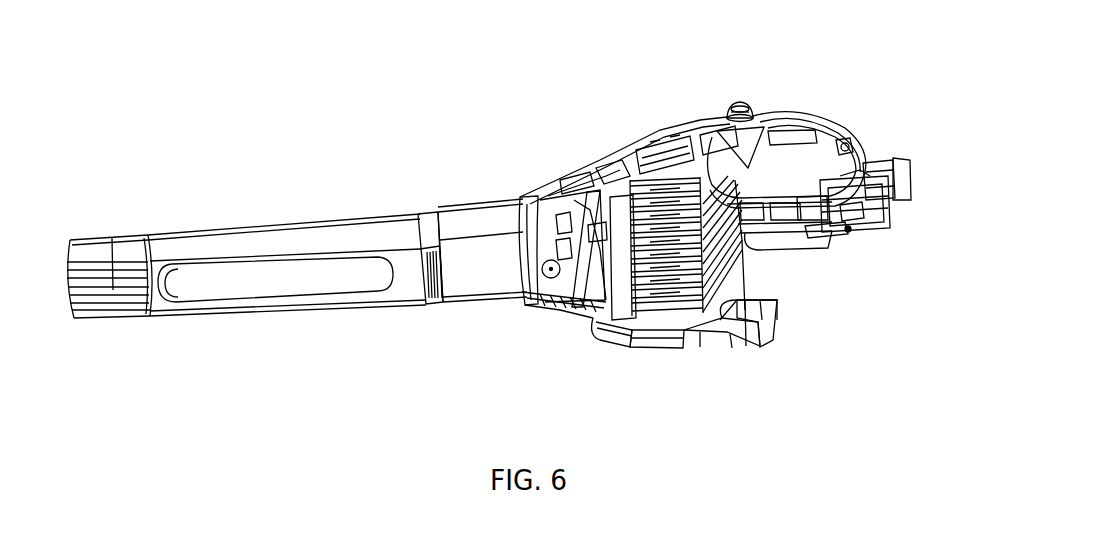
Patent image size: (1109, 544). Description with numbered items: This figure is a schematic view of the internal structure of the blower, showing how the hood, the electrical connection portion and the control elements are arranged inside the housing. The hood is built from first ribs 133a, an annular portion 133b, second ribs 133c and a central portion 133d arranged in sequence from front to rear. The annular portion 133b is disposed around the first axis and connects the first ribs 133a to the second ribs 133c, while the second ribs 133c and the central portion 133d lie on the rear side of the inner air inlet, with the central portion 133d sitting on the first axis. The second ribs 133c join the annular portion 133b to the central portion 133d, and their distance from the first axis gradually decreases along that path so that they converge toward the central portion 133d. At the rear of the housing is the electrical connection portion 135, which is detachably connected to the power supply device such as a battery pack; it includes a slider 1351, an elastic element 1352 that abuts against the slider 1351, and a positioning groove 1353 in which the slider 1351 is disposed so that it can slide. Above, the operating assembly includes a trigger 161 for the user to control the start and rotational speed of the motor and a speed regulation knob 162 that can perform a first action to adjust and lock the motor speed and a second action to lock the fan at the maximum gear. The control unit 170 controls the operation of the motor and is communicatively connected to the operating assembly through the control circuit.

The control unit 170 is at (647, 157).
The speed regulation knob 162 is at (757, 104).
The trigger 161 is at (790, 127).
The positioning groove 1353 is at (843, 150).
The slider 1351 is at (853, 212).
The elastic element 1352 is at (855, 240).
The electrical connection portion 135 is at (896, 216).
The first ribs 133a is at (630, 350).
The annular portion 133b is at (690, 347).
The second ribs 133c is at (757, 347).
The central portion 133d is at (797, 330).